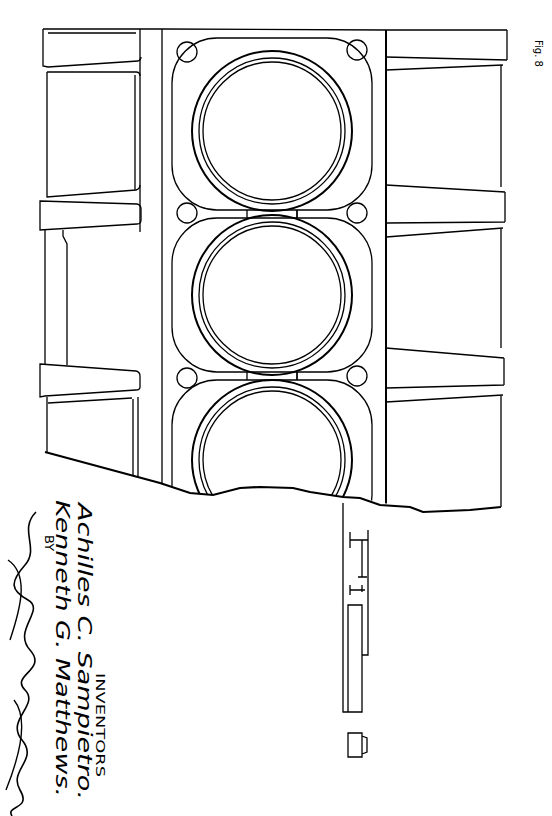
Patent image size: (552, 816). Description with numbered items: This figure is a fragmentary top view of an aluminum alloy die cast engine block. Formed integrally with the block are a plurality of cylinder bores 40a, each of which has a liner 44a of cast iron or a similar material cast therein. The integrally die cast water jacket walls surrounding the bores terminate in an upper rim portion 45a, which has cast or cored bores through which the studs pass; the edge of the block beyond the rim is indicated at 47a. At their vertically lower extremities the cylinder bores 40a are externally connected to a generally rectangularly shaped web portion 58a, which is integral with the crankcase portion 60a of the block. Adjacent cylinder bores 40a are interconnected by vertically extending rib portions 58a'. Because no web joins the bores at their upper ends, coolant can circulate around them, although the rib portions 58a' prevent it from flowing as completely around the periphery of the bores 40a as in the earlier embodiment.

The cylinder bore 40a is at (352, 120).
The liner 44a is at (213, 107).
The upper rim portion 45a is at (388, 256).
The side wall 47a is at (502, 272).
The web portion 58a is at (308, 398).
The rib portion 58a' is at (313, 347).
The crankcase portion 60a is at (502, 467).